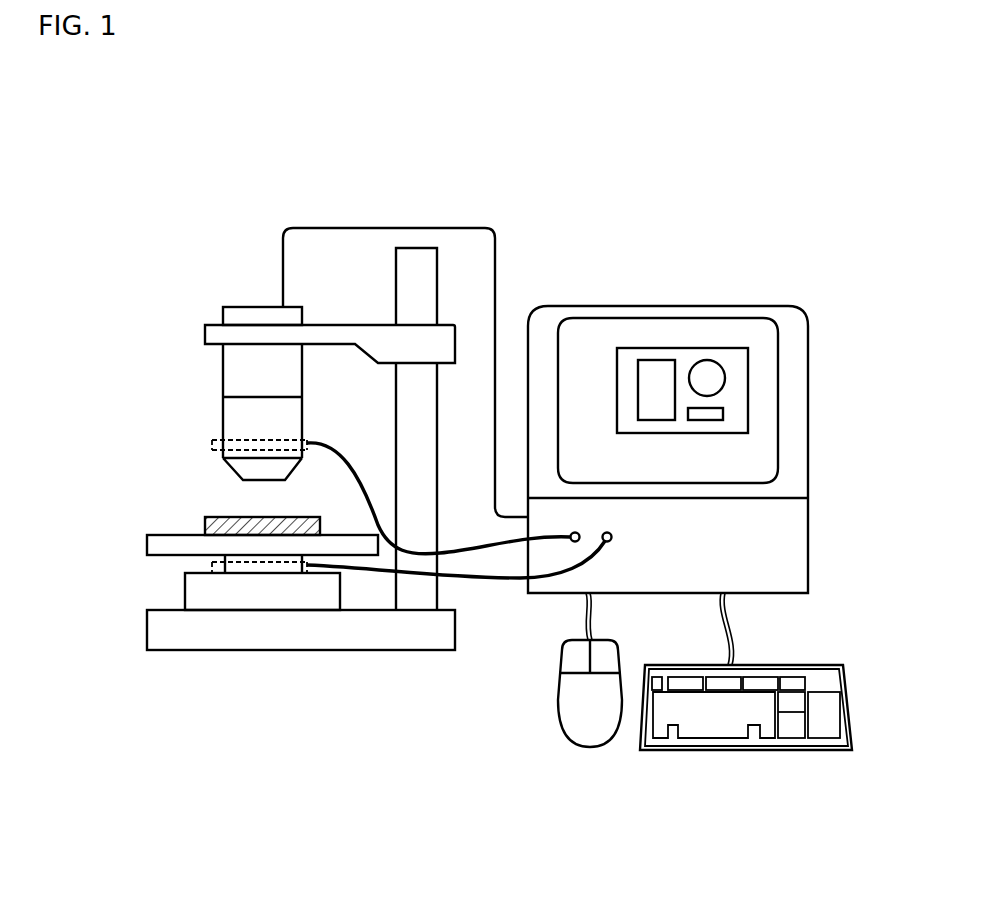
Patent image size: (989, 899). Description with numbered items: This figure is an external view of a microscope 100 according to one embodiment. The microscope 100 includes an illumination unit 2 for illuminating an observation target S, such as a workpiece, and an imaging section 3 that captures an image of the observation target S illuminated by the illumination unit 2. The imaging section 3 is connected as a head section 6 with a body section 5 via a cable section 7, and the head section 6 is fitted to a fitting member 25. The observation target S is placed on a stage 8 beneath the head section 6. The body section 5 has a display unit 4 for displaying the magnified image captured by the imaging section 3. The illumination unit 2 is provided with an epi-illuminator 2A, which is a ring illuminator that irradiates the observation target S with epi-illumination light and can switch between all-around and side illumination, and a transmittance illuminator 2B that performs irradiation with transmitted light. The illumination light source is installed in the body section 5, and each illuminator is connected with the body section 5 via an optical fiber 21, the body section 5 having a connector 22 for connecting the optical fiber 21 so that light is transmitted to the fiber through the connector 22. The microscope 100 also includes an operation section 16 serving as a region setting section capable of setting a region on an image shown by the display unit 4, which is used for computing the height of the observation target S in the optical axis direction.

The microscope 100 is at (503, 152).
The cable section 7 is at (358, 228).
The fitting member 25 is at (340, 325).
The imaging section 3 is at (223, 362).
The illumination unit 2 is at (214, 440).
The epi-illuminator 2A is at (214, 436).
The head section 6 is at (288, 412).
The transmittance illuminator 2B is at (212, 563).
The observation target S is at (220, 517).
The stage 8 is at (178, 534).
The body section 5 is at (668, 401).
The display unit 4 is at (598, 318).
The connector 22 is at (614, 539).
The optical fiber 21 is at (495, 582).
The operation section 16 is at (535, 693).